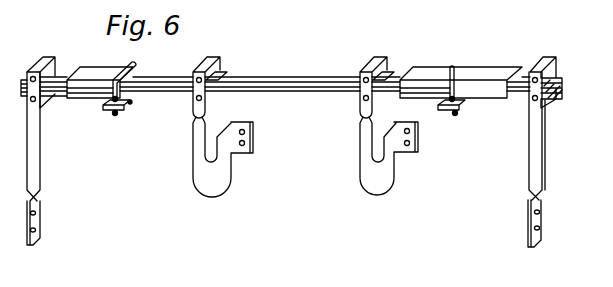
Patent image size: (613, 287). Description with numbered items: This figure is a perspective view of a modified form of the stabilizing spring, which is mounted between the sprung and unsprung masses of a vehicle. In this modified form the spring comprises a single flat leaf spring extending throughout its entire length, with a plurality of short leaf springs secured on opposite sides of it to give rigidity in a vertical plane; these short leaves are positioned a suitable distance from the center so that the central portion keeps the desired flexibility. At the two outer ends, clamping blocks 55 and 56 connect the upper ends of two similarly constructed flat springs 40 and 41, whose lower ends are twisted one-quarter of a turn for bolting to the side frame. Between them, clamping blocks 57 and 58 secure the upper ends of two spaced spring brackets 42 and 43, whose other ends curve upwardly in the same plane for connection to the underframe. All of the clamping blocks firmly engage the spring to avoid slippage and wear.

The flat spring 40 is at (33, 165).
The flat spring 41 is at (532, 150).
The spring bracket 42 is at (218, 177).
The spring bracket 43 is at (388, 172).
The clamping block 55 is at (45, 62).
The clamping block 56 is at (560, 63).
The clamping block 57 is at (222, 66).
The clamping block 58 is at (390, 60).